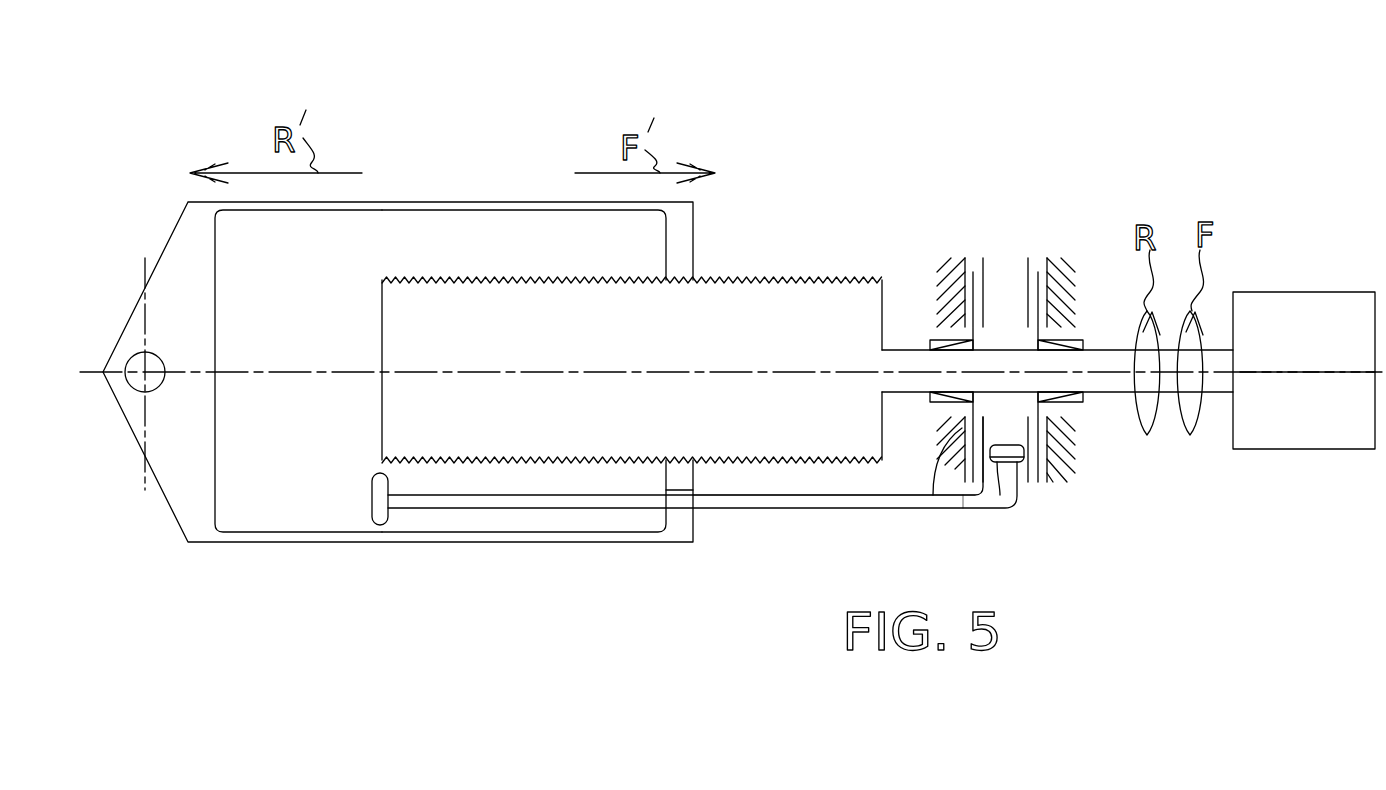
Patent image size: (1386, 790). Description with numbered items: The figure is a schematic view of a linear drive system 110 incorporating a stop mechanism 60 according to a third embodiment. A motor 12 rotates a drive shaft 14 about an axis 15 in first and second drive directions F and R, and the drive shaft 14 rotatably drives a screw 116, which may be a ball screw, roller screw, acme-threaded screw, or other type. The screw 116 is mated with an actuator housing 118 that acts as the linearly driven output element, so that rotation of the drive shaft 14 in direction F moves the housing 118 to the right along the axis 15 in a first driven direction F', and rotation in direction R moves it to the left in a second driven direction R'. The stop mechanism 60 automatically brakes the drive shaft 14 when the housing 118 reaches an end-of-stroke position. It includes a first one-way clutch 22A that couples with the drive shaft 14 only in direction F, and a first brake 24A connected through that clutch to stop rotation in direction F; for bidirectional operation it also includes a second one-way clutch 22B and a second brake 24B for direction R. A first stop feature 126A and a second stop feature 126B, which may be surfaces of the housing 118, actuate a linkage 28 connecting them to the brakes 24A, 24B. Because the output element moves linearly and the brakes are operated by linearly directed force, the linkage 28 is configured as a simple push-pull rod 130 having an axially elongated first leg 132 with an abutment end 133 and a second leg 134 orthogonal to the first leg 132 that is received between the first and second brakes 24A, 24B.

The linear drive system 110 is at (1180, 75).
The actuator housing 118 is at (420, 202).
The screw 116 is at (743, 280).
The stop mechanism 60 is at (1050, 362).
The second one-way clutch 22B is at (930, 340).
The first one-way clutch 22A is at (1082, 412).
The second brake 24B is at (933, 500).
The first brake 24A is at (1073, 478).
The motor 12 is at (1283, 292).
The drive shaft 14 is at (1218, 392).
The axis 15 is at (1272, 372).
The first stop feature 126A is at (215, 508).
The second stop feature 126B is at (666, 527).
The first leg 132 is at (573, 508).
The abutment end 133 is at (380, 525).
The second leg 134 is at (1017, 468).
The push-pull rod 130 is at (963, 508).
The linkage 28 is at (833, 548).